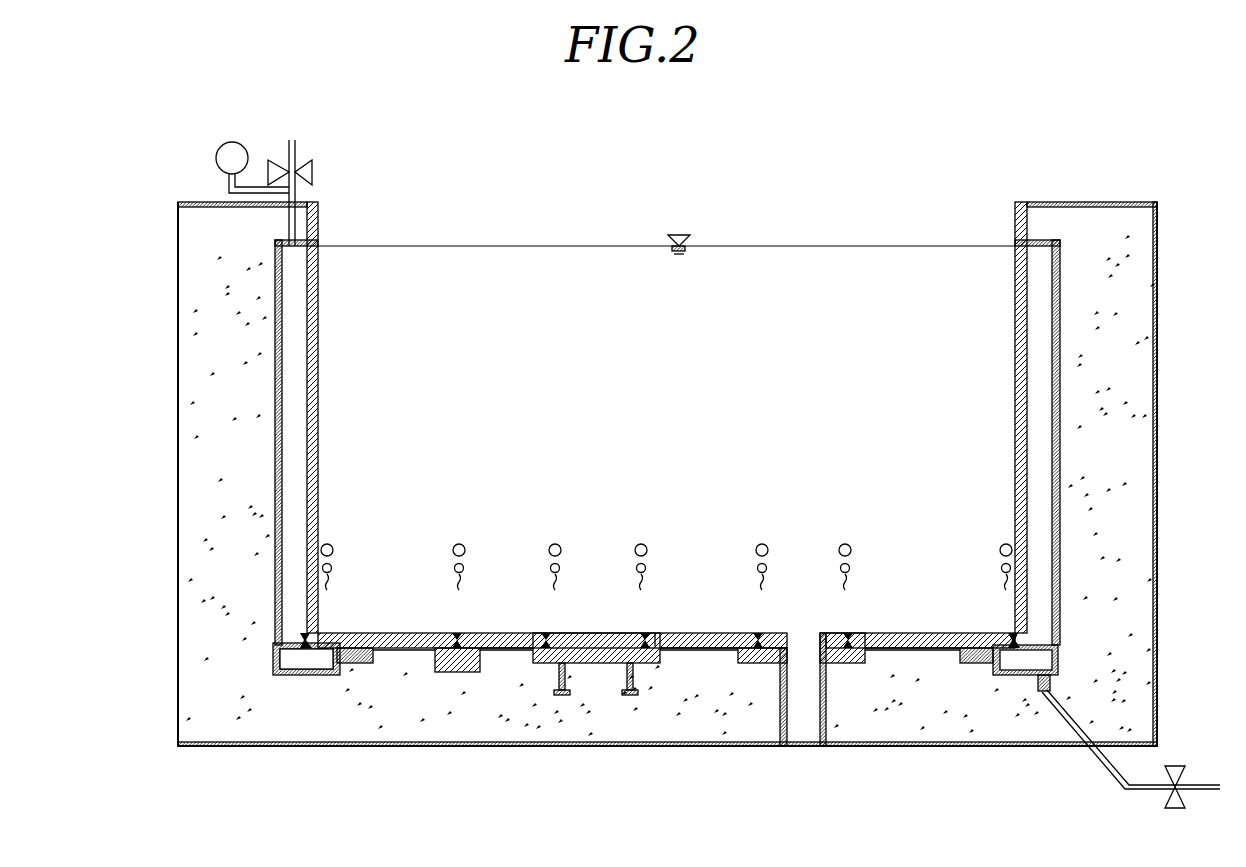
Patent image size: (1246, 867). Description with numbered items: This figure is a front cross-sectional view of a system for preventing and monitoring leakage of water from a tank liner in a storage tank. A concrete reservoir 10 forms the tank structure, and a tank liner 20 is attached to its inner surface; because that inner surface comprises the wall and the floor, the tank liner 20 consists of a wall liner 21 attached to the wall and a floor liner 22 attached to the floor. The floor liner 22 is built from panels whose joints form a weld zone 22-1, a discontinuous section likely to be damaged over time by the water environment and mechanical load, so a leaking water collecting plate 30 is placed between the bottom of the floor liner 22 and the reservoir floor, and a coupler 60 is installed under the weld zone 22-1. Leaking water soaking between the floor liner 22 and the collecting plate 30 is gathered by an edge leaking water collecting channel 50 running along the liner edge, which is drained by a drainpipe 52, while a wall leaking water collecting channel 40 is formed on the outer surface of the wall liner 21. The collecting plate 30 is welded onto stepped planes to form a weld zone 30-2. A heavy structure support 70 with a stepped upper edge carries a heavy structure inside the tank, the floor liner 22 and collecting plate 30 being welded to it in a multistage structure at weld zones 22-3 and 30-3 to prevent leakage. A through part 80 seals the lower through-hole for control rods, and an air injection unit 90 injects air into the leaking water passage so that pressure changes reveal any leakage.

The concrete reservoir 10 is at (190, 433).
The tank liner 20 is at (667, 425).
The wall liner 21 is at (318, 495).
The floor liner 22 is at (390, 633).
The weld zone 22-1 is at (458, 633).
The weld zone 22-3 is at (642, 633).
The leaking water collecting plate 30 is at (493, 650).
The weld zone 30-2 is at (1025, 675).
The weld zone 30-3 is at (660, 633).
The wall leaking water collecting channel 40 is at (275, 550).
The edge leaking water collecting channel 50 is at (273, 660).
The drainpipe 52 is at (1112, 778).
The coupler 60 is at (457, 672).
The heavy structure support 70 is at (600, 663).
The through part 80 is at (767, 663).
The air injection unit 90 is at (212, 157).